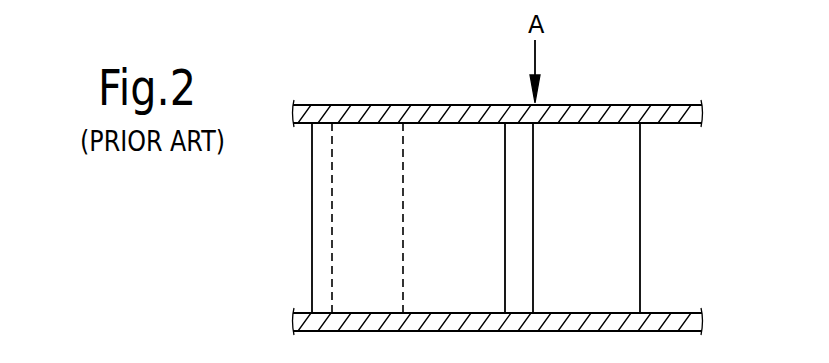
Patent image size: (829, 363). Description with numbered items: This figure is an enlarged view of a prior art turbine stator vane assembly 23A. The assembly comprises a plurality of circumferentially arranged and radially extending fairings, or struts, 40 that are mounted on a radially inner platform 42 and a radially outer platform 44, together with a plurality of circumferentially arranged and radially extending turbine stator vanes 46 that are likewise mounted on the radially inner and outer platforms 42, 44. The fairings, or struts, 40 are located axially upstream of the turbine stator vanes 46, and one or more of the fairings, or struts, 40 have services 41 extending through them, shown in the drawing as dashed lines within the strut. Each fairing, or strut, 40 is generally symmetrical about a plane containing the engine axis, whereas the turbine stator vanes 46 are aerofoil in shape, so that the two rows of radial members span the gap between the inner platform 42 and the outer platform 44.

The turbine stator vane assembly 23A is at (690, 175).
The fairing or strut 40 is at (320, 243).
The services 41 is at (357, 187).
The radially inner platform 42 is at (680, 322).
The radially outer platform 44 is at (598, 113).
The turbine stator vane 46 is at (605, 260).